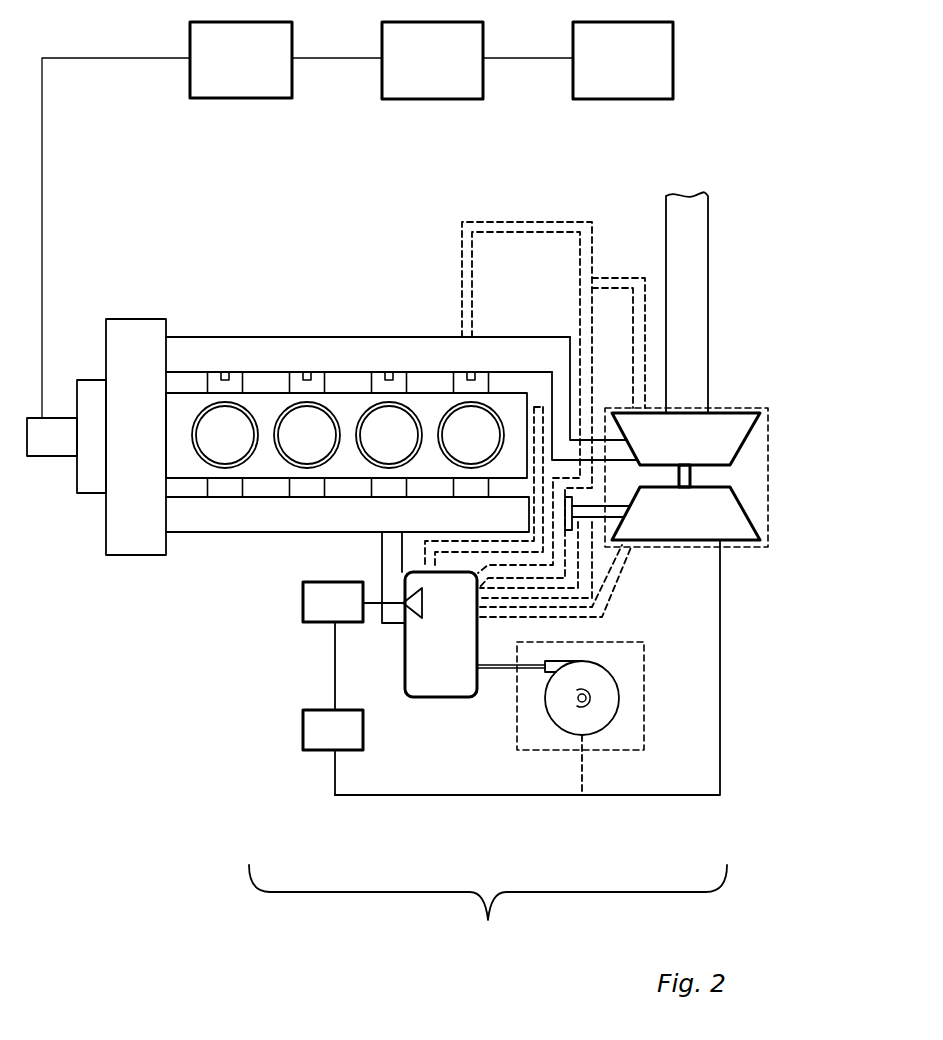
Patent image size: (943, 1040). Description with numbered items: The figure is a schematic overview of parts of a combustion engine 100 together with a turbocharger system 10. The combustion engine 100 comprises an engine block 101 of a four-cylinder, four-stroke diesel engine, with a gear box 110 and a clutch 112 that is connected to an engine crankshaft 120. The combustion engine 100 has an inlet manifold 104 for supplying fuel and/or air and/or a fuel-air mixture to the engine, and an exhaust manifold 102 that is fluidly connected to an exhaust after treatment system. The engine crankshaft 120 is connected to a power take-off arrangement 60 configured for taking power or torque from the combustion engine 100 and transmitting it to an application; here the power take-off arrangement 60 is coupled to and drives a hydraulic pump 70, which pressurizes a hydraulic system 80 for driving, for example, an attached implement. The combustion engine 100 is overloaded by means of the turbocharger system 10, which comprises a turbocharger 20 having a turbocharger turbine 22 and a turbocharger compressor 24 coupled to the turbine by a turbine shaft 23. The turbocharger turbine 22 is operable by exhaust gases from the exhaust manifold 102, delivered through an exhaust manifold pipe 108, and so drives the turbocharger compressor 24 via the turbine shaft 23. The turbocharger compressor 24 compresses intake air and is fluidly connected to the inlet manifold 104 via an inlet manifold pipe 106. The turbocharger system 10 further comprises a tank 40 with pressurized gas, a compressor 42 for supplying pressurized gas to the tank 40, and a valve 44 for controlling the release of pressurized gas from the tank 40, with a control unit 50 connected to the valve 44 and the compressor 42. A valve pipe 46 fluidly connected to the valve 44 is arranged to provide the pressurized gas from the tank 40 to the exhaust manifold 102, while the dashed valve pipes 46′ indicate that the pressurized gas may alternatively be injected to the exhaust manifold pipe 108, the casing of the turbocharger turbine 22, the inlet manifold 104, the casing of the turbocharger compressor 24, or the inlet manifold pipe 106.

The turbocharger system 10 is at (488, 911).
The turbocharger 20 is at (601, 493).
The turbocharger turbine 22 is at (748, 518).
The turbine shaft 23 is at (693, 478).
The turbocharger compressor 24 is at (753, 432).
The tank 40 is at (463, 659).
The compressor 42 is at (618, 698).
The valve 44 is at (413, 613).
The valve pipe 46 is at (382, 555).
The dashed valve pipes 46′ is at (462, 268).
The control unit 50 is at (365, 731).
The power take-off arrangement 60 is at (227, 77).
The hydraulic pump 70 is at (418, 77).
The hydraulic system 80 is at (609, 77).
The combustion engine 100 is at (368, 359).
The engine block 101 is at (258, 407).
The exhaust manifold 102 is at (369, 528).
The inlet manifold 104 is at (369, 368).
The inlet manifold pipe 106 is at (563, 383).
The exhaust manifold pipe 108 is at (597, 520).
The gear box 110 is at (94, 378).
The clutch 112 is at (148, 318).
The engine crankshaft 120 is at (63, 457).